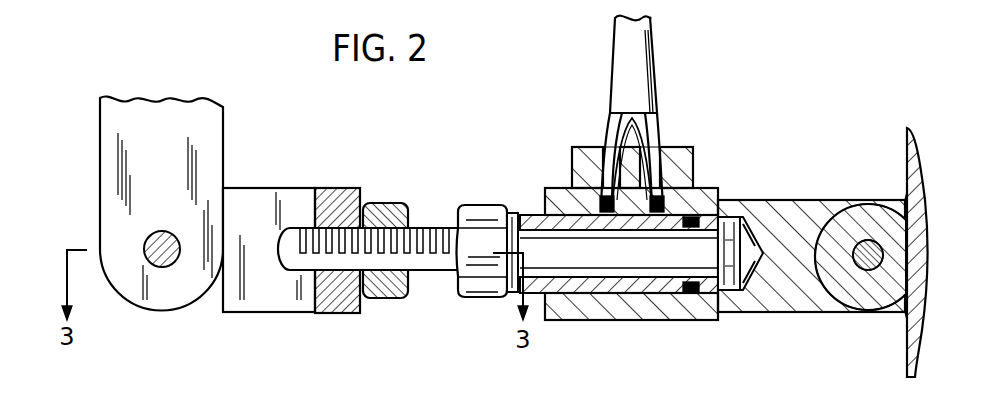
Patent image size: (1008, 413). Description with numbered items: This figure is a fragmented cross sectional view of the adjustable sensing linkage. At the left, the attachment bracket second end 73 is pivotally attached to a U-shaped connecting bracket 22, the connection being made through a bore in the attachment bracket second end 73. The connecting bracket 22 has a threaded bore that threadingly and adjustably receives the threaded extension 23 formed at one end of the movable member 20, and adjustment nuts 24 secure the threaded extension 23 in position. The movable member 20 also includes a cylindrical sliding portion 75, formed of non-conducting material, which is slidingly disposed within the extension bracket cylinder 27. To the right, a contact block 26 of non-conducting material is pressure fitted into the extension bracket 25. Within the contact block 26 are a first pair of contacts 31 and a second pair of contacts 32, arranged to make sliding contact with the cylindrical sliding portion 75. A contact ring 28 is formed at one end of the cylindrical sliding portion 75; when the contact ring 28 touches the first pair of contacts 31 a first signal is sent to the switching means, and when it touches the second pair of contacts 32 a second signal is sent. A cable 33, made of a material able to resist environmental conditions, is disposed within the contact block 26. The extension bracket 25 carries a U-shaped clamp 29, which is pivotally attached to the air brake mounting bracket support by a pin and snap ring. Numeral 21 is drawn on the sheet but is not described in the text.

The movable member 20 is at (530, 207).
The mounting bracket 21 is at (223, 140).
The U-shaped connecting bracket 22 is at (280, 190).
The threaded extension 23 is at (423, 281).
The adjustment nuts 24 is at (473, 204).
The extension bracket 25 is at (778, 200).
The contact block 26 is at (672, 147).
The extension bracket cylinder 27 is at (643, 297).
The contact ring 28 is at (690, 296).
The U-shaped clamp 29 is at (872, 200).
The first pair of contacts 31 is at (692, 178).
The second pair of contacts 32 is at (583, 147).
The cable 33 is at (650, 62).
The attachment bracket second end 73 is at (137, 306).
The cylindrical sliding portion 75 is at (565, 300).